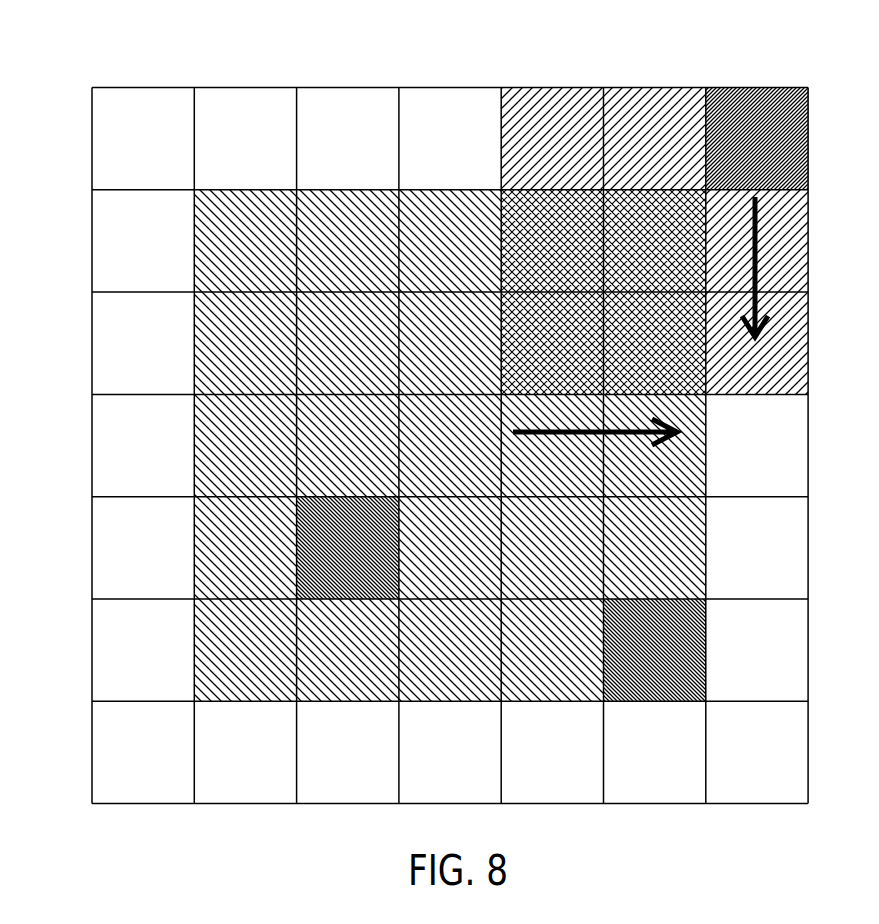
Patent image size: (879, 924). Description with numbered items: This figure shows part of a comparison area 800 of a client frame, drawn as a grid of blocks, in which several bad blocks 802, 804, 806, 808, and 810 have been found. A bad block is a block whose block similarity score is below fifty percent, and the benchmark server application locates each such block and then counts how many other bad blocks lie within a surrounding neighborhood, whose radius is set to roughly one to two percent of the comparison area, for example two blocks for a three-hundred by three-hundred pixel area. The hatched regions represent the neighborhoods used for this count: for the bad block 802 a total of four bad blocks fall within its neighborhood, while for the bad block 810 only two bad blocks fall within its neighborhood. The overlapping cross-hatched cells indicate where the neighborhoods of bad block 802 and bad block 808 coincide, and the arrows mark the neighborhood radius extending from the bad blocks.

The grid map 800 is at (125, 53).
The bad block 802 is at (434, 450).
The bad block 804 is at (330, 558).
The bad block 806 is at (637, 658).
The bad block 808 is at (639, 250).
The bad block 810 is at (742, 150).